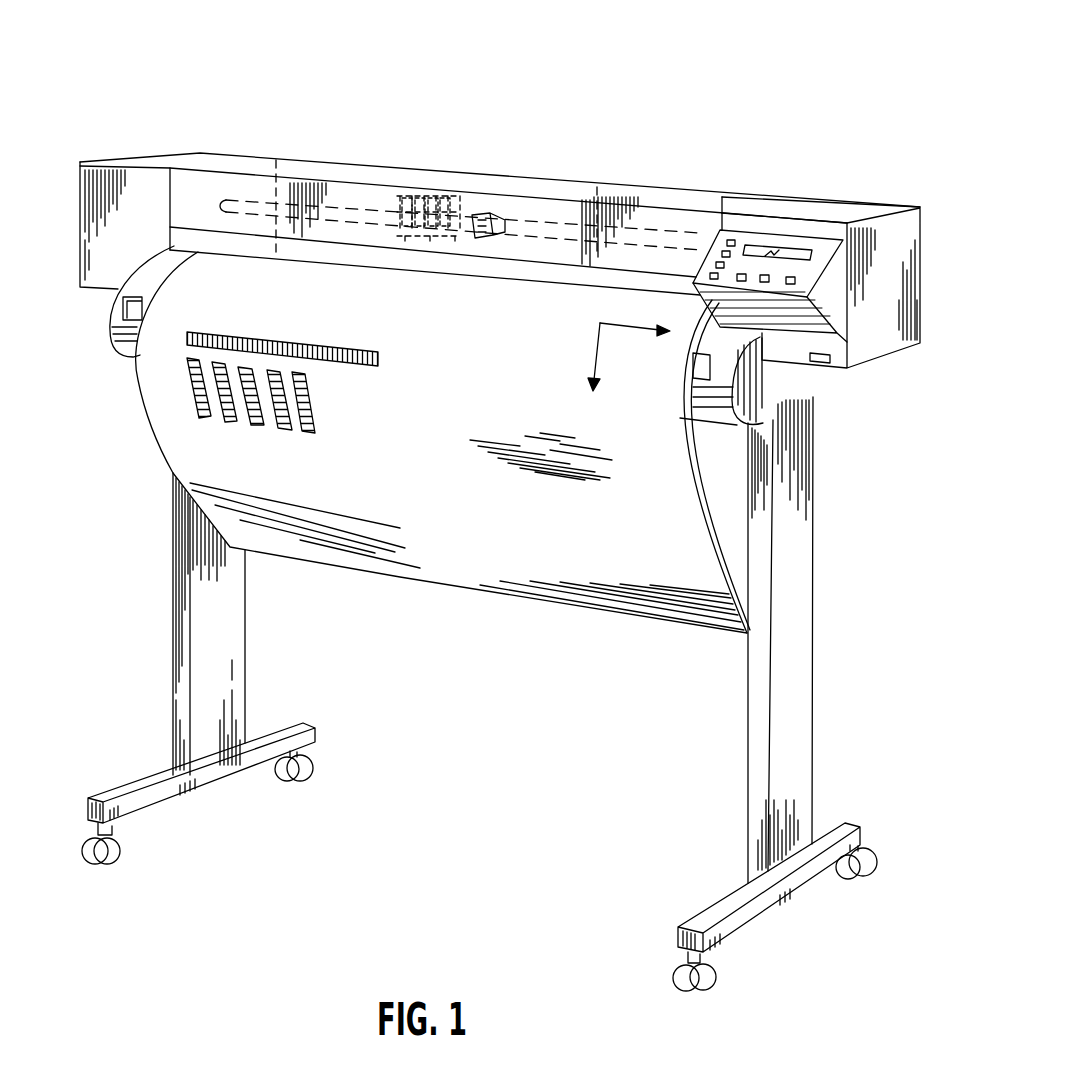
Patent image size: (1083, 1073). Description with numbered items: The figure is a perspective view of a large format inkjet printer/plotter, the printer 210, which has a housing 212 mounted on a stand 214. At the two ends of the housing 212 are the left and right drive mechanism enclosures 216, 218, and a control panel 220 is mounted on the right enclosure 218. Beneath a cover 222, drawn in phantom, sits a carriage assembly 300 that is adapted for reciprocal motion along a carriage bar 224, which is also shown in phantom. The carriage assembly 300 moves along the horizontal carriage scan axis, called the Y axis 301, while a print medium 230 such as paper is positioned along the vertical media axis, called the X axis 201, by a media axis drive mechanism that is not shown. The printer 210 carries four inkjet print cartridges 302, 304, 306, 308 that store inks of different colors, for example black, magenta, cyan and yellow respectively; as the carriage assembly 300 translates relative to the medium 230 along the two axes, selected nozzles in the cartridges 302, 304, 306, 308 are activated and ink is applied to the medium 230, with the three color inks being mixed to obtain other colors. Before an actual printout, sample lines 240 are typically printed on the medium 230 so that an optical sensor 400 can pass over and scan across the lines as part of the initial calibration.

The printer 210 is at (714, 147).
The housing 212 is at (910, 215).
The stand 214 is at (798, 605).
The left drive mechanism enclosure 216 is at (165, 158).
The right drive mechanism enclosure 218 is at (822, 198).
The control panel 220 is at (763, 282).
The cover 222 is at (672, 192).
The carriage bar 224 is at (566, 224).
The medium 230 is at (423, 549).
The sample lines 240 is at (194, 414).
The carriage assembly 300 is at (478, 203).
The Y axis 301 is at (630, 322).
The X axis 201 is at (596, 362).
The inkjet print cartridge 302 is at (448, 212).
The inkjet print cartridge 304 is at (437, 196).
The inkjet print cartridge 306 is at (422, 203).
The inkjet print cartridge 308 is at (400, 196).
The optical sensor 400 is at (506, 208).